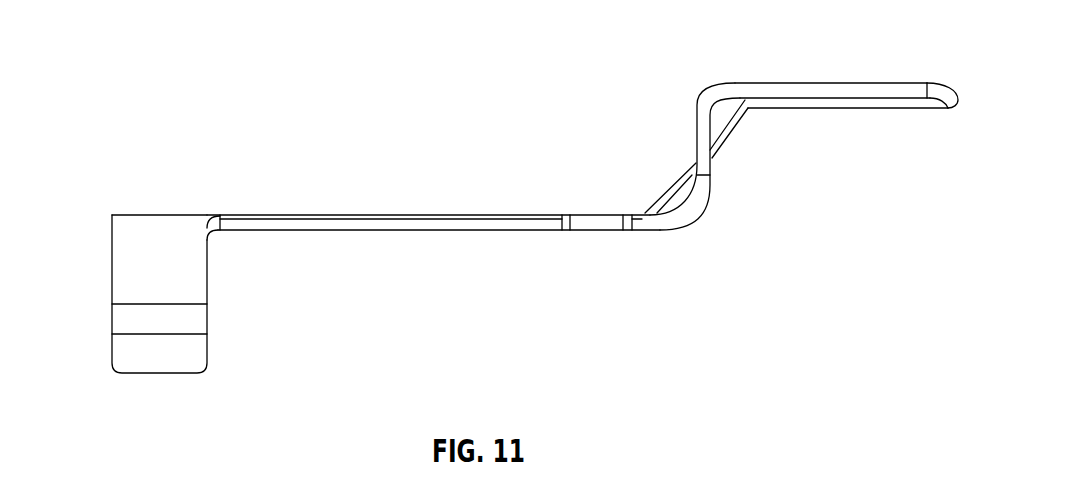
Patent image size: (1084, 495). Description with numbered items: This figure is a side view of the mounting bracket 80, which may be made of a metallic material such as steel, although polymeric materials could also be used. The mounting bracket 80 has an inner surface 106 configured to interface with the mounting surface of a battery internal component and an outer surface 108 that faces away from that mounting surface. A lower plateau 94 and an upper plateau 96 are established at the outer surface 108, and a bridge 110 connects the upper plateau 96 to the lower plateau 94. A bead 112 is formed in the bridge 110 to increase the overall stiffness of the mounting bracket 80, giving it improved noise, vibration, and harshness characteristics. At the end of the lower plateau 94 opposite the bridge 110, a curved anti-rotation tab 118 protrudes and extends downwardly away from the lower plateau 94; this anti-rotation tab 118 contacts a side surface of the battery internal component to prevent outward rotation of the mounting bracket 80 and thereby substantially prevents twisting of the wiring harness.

The mounting bracket 80 is at (267, 56).
The lower plateau 94 is at (362, 215).
The upper plateau 96 is at (845, 83).
The inner surface 106 is at (276, 242).
The outer surface 108 is at (261, 208).
The bridge 110 is at (703, 150).
The bead 112 is at (663, 193).
The anti-rotation tab 118 is at (127, 257).